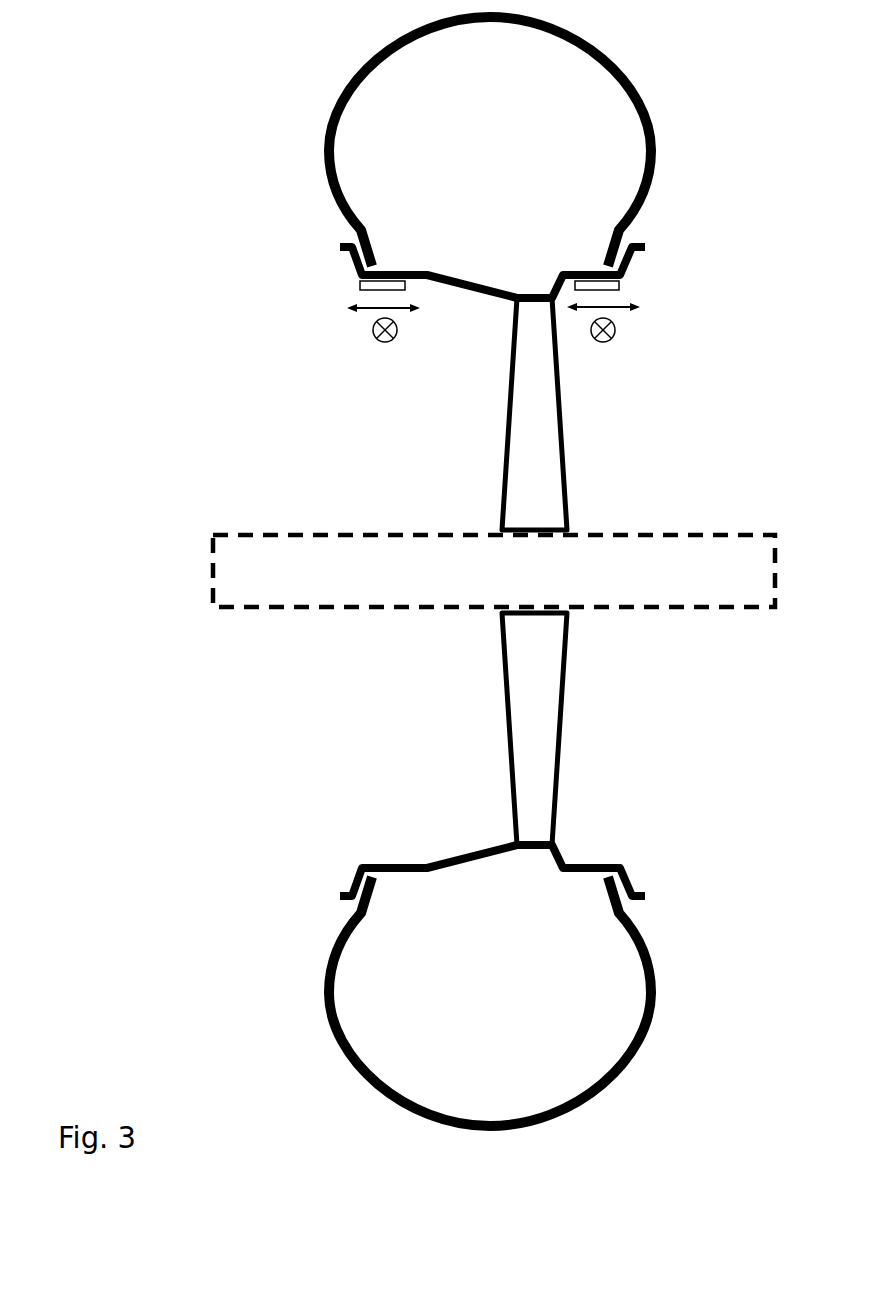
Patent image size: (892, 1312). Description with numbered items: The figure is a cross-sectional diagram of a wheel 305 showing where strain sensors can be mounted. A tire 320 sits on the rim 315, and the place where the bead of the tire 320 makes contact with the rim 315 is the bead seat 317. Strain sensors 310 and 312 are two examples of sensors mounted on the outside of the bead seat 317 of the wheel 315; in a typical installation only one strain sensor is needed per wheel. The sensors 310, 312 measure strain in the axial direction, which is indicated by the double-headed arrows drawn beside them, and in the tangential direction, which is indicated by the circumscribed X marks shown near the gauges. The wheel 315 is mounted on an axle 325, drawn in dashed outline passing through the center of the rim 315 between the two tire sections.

The wheel 305 is at (285, 396).
The strain sensor 310 is at (620, 283).
The strain sensor 312 is at (360, 285).
The rim 315 is at (505, 425).
The bead seat 317 is at (366, 855).
The tire 320 is at (657, 132).
The axle 325 is at (700, 533).